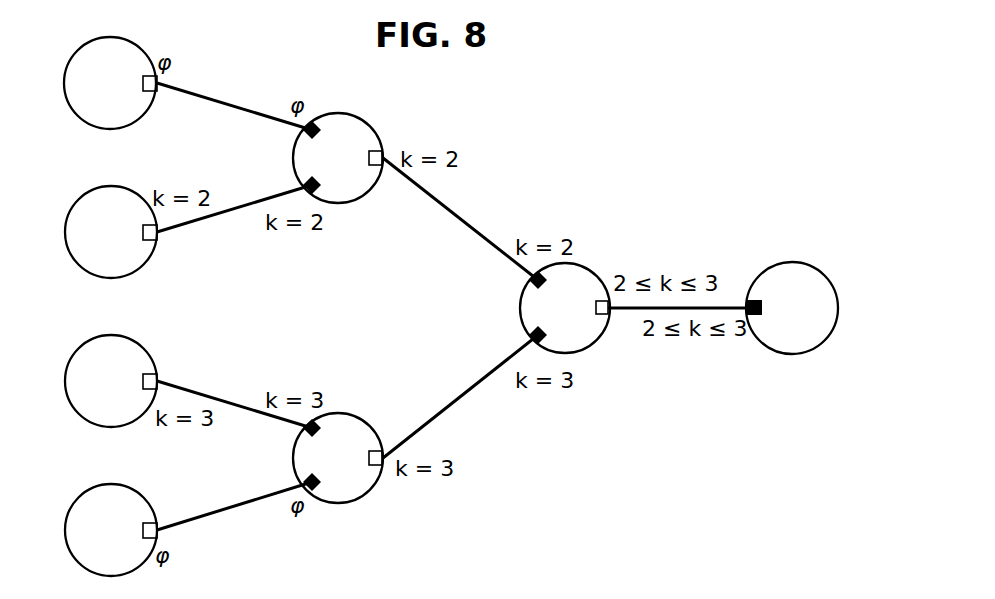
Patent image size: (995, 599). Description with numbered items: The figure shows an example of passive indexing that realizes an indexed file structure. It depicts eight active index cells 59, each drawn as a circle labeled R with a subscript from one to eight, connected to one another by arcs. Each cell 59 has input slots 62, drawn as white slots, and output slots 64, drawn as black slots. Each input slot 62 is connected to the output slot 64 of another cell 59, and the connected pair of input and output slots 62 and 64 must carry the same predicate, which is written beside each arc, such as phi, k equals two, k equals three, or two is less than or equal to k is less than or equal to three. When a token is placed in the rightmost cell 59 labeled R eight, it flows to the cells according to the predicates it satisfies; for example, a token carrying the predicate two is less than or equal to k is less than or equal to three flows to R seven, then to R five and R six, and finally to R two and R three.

The active index cell 59 is at (78, 118).
The input slot 62 is at (157, 83).
The output slot 64 is at (302, 133).